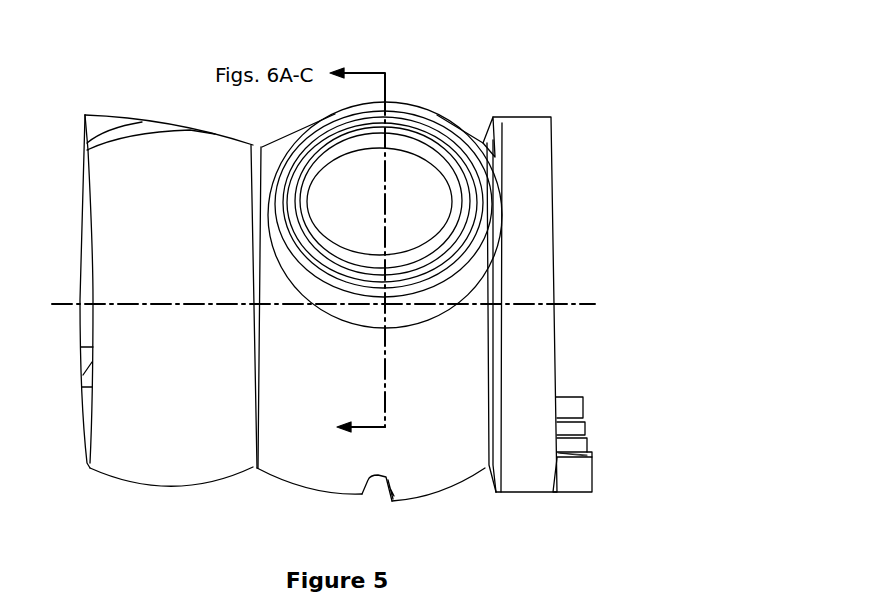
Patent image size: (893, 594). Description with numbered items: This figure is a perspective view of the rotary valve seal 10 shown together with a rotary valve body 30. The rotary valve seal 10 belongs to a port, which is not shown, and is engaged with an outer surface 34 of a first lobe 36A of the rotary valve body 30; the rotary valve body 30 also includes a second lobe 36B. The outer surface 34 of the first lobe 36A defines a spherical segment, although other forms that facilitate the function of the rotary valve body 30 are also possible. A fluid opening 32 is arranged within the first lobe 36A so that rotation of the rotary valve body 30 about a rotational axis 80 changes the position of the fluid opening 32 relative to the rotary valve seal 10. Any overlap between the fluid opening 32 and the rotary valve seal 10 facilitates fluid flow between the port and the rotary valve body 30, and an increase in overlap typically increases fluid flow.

The rotary valve seal 10 is at (415, 122).
The rotary valve body 30 is at (526, 118).
The fluid opening 32 is at (363, 493).
The outer surface 34 is at (295, 488).
The first lobe 36A is at (450, 478).
The second lobe 36B is at (137, 470).
The rotational axis 80 is at (62, 302).